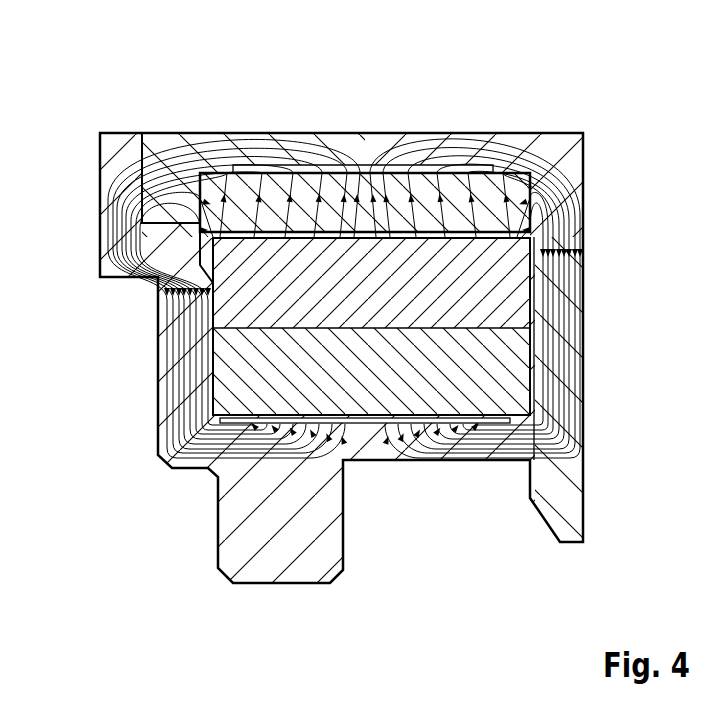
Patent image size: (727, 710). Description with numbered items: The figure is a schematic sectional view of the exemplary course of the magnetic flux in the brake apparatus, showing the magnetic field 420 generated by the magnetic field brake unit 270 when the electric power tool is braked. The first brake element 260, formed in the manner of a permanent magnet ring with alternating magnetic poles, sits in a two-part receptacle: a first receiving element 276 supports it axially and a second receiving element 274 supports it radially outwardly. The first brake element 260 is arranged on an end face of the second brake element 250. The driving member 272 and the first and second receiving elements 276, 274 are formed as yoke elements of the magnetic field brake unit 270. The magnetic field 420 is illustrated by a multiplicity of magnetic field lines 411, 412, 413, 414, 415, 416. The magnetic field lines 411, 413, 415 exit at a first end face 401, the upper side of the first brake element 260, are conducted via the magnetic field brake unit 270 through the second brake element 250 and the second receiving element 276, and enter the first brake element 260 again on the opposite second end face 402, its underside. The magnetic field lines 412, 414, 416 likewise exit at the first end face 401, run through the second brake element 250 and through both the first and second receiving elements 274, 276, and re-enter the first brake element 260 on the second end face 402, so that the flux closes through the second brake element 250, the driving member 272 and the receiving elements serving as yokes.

The second brake element 250 is at (503, 148).
The first brake element 260 is at (228, 348).
The magnetic field brake unit 270 is at (126, 143).
The driving member 272 is at (355, 145).
The second receiving element 274 is at (100, 167).
The first receiving element 276 is at (288, 572).
The first end face 401 is at (552, 188).
The second end face 402 is at (392, 420).
The magnetic field line 411 is at (388, 145).
The magnetic field line 412 is at (327, 145).
The magnetic field line 413 is at (421, 148).
The magnetic field line 414 is at (298, 145).
The magnetic field line 415 is at (448, 148).
The magnetic field line 416 is at (275, 147).
The magnetic field 420 is at (567, 151).